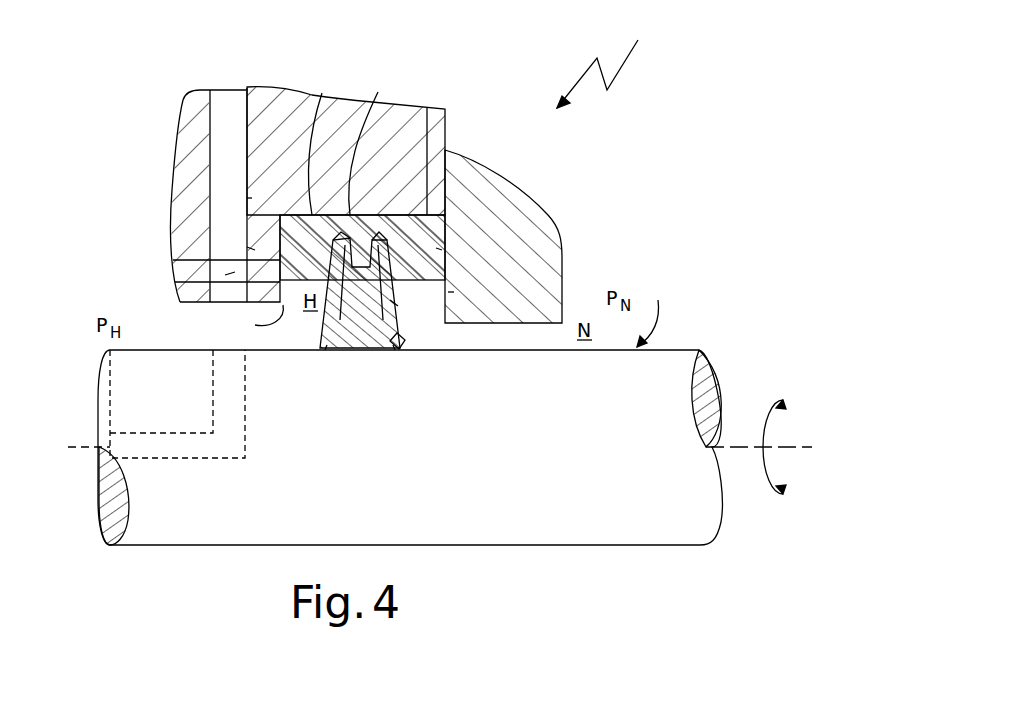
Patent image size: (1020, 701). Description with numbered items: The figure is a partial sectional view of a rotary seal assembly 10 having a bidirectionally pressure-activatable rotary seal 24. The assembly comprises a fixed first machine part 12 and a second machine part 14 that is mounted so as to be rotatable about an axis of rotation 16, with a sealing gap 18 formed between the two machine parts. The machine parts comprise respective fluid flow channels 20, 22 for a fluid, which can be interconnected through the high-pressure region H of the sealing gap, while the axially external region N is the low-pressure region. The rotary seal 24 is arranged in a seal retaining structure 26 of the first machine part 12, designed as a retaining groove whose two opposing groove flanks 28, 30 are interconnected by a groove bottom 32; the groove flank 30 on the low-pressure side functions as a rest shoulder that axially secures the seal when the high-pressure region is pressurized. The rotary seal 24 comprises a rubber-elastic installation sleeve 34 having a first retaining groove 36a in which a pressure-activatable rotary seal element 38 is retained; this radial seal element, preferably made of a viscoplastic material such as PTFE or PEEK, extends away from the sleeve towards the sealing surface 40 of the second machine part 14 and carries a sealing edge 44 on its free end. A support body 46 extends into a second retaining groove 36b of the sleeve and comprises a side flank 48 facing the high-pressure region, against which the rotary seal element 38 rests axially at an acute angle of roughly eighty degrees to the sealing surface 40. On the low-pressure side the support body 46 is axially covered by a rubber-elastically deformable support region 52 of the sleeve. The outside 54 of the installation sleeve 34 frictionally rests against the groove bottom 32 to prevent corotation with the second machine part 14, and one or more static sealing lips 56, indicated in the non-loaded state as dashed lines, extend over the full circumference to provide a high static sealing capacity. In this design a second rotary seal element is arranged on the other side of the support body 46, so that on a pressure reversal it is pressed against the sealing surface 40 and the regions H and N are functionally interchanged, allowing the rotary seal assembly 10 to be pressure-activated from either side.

The rotary seal assembly 10 is at (606, 63).
The first machine part 12 is at (289, 123).
The second machine part 14 is at (572, 458).
The axis of rotation 16 is at (741, 447).
The sealing gap 18 is at (492, 346).
The fluid flow channel 20 is at (222, 132).
The fluid flow channel 22 is at (130, 446).
The rotary seal 24 is at (247, 198).
The seal retaining structure 26 is at (247, 247).
The groove flank 28 is at (255, 325).
The groove flank 30 is at (448, 292).
The groove bottom 32 is at (449, 198).
The installation sleeve 34 is at (322, 93).
The first retaining groove 36a is at (268, 262).
The second retaining groove 36b is at (390, 300).
The rotary seal element 38 is at (319, 350).
The sealing surface 40 is at (654, 312).
The sealing edge 44 is at (325, 350).
The support body 46 is at (284, 218).
The side flank 48 is at (366, 350).
The support region 52 is at (436, 248).
The outside 54 is at (378, 92).
The static sealing lip 56 is at (430, 112).